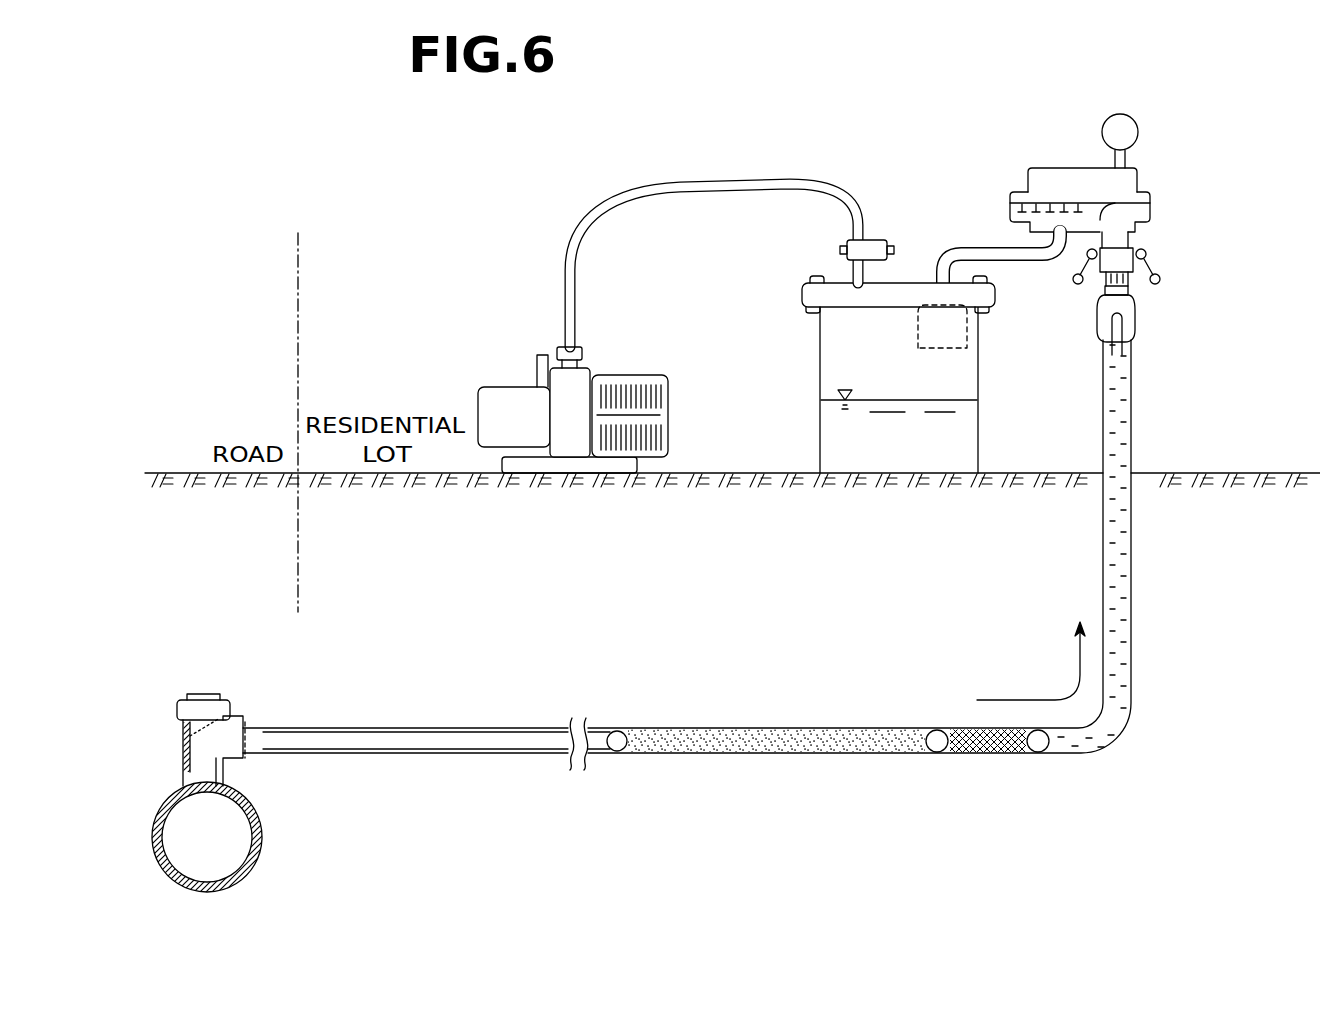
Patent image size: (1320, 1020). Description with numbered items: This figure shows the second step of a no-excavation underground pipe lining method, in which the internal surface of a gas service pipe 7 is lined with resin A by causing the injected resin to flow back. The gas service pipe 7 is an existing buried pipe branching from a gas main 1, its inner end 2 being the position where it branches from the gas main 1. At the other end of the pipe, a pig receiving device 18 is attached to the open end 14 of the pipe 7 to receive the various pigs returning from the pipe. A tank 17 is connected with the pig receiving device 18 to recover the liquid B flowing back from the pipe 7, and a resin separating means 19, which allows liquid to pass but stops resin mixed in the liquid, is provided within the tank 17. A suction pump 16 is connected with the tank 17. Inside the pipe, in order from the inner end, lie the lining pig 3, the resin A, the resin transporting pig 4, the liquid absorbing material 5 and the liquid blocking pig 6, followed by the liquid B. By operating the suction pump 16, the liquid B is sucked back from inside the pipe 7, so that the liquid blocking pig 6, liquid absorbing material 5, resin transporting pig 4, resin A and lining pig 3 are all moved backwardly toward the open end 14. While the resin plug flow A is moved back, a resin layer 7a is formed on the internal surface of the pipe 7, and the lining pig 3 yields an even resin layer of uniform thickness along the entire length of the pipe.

The gas main 1 is at (245, 868).
The inner end 2 is at (237, 722).
The lining pig 3 is at (620, 752).
The resin transporting pig 4 is at (940, 753).
The liquid absorbing material 5 is at (950, 730).
The liquid blocking pig 6 is at (1040, 738).
The gas service pipe 7 is at (324, 728).
The resin layer 7a is at (388, 743).
The open end 14 is at (1130, 338).
The suction pump 16 is at (498, 340).
The tank 17 is at (893, 335).
The pig receiving device 18 is at (1120, 184).
The resin separating means 19 is at (957, 330).
The resin A is at (729, 737).
The liquid B is at (1122, 578).